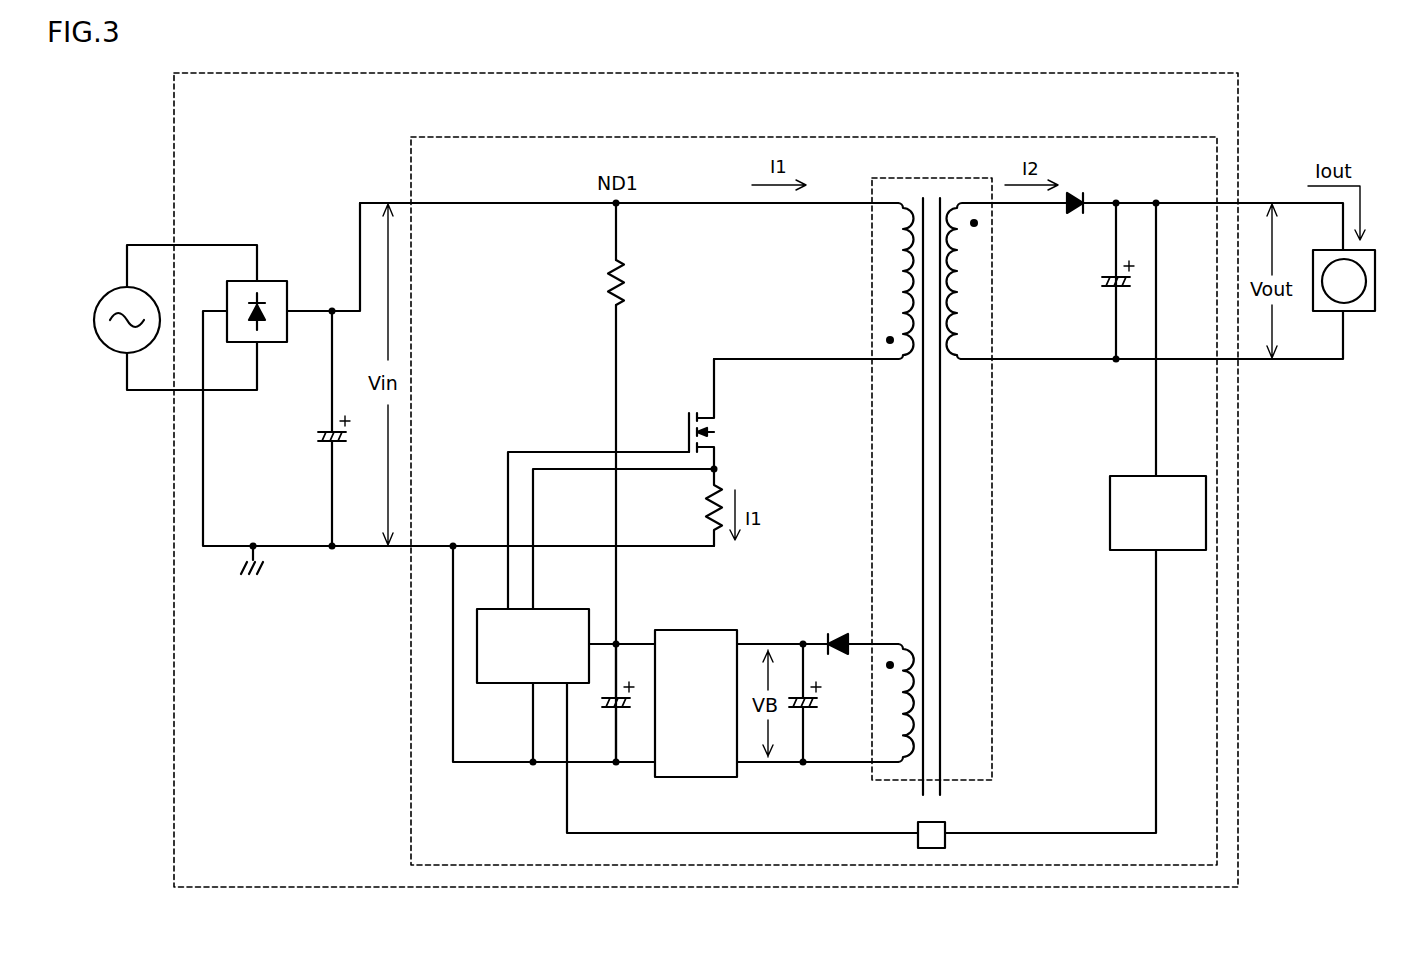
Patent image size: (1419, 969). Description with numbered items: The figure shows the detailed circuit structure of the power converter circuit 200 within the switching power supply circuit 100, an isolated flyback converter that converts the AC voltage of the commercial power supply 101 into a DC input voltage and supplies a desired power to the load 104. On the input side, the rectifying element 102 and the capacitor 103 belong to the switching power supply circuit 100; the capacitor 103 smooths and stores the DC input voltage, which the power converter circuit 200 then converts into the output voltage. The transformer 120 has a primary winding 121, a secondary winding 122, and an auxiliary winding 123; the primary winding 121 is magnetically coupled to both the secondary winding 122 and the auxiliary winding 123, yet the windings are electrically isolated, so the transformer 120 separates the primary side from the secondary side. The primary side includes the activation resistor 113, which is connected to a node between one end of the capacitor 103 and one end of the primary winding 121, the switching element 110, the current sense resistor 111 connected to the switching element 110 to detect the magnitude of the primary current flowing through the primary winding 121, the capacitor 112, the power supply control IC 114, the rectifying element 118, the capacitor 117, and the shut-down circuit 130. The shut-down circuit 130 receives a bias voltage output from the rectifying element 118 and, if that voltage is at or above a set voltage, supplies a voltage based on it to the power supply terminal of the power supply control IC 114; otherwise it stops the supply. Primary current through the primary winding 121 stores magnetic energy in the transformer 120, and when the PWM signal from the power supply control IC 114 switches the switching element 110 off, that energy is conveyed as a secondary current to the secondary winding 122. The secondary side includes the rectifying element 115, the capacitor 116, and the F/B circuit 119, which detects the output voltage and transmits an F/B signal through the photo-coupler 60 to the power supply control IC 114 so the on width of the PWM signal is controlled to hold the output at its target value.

The switching power supply circuit 100 is at (1168, 73).
The power converter circuit 200 is at (1093, 137).
The commercial power supply 101 is at (113, 288).
The rectifying element 102 is at (273, 281).
The capacitor 103 is at (320, 437).
The load 104 is at (1363, 313).
The switching element 110 is at (710, 414).
The current sense resistor 111 is at (710, 509).
The capacitor 112 is at (599, 703).
The activation resistor 113 is at (610, 282).
The power supply control IC 114 is at (507, 685).
The rectifying element 115 is at (1073, 192).
The capacitor 116 is at (1098, 284).
The capacitor 117 is at (823, 705).
The rectifying element 118 is at (836, 636).
The F/B circuit 119 is at (1110, 511).
The transformer 120 is at (930, 178).
The primary winding 121 is at (893, 273).
The secondary winding 122 is at (972, 270).
The auxiliary winding 123 is at (912, 692).
The shut-down circuit 130 is at (693, 630).
The photo-coupler 60 is at (936, 821).